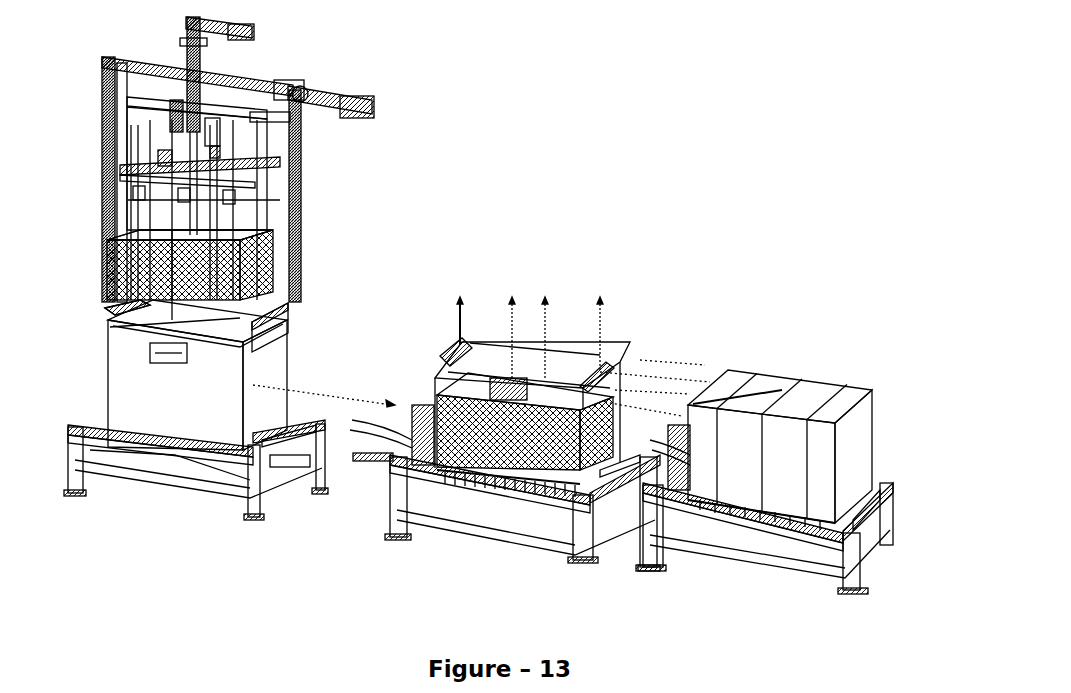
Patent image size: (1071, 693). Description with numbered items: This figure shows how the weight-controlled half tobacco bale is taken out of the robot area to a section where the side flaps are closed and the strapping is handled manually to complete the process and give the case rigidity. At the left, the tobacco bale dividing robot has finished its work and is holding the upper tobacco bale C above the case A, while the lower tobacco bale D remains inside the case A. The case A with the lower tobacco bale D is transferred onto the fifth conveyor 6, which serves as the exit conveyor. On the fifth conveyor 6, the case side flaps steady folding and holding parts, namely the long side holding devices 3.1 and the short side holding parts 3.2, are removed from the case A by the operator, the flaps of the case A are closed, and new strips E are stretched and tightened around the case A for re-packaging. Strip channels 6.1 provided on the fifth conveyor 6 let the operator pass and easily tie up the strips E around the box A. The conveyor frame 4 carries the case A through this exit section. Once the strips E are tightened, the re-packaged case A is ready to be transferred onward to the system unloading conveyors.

The long side holding devices 3.1 is at (240, 317).
The short side holding parts 3.2 is at (250, 340).
The upper tobacco bale C is at (272, 263).
The case A is at (296, 347).
The conveyor table 4 is at (170, 480).
The lower tobacco bale D is at (452, 440).
The fifth conveyor 6 is at (745, 548).
The strips E is at (780, 288).
The strip channels 6.1 is at (717, 497).